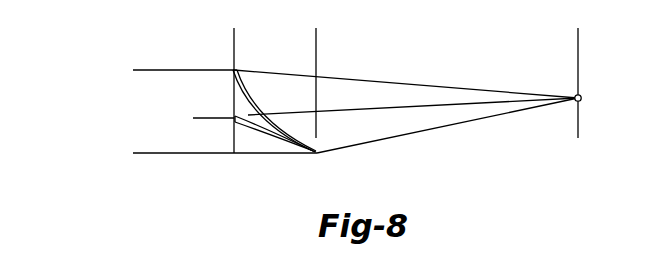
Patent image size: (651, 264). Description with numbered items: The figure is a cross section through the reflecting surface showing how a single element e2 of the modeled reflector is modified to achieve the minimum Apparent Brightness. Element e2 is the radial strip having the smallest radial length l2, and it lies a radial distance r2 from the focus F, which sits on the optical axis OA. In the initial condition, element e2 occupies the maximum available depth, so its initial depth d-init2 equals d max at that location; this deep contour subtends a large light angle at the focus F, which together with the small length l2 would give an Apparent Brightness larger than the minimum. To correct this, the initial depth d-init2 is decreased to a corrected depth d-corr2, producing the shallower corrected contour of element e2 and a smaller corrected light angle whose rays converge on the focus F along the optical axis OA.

The initial depth d-init2 is at (143, 152).
The corrected depth d-corr2 is at (203, 93).
The radial length l2 is at (315, 38).
The radial distance r2 is at (577, 38).
The optical axis OA is at (578, 62).
The focus F is at (588, 99).
The element e2 is at (268, 136).